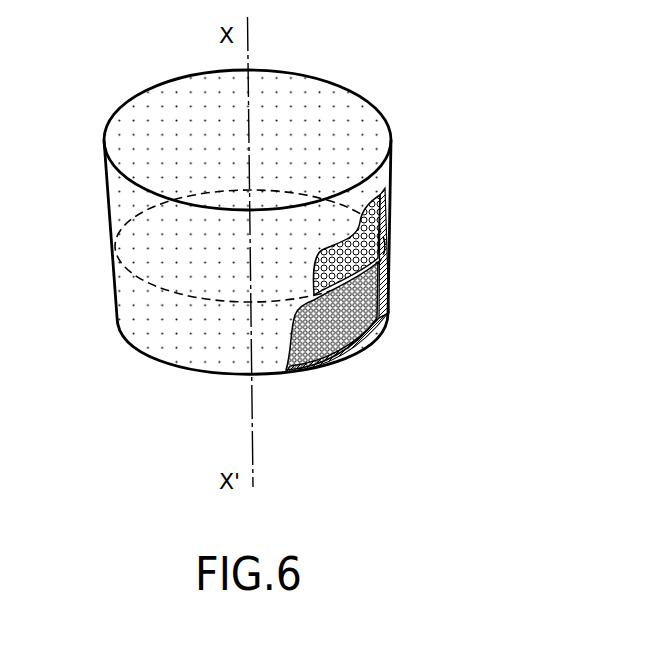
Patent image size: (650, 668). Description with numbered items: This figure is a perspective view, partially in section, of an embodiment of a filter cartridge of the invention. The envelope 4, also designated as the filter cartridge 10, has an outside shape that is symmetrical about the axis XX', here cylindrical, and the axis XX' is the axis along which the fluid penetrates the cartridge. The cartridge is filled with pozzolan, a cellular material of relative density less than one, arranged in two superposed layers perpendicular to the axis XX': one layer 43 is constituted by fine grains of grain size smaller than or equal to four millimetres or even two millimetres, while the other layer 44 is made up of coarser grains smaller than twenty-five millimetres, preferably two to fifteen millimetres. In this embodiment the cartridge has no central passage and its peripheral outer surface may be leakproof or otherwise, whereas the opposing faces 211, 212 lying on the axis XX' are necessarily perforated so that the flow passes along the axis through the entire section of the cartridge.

The envelope 4 is at (291, 249).
The filter cartridge 10 is at (291, 252).
The opposing face 211 is at (220, 117).
The opposing face 212 is at (228, 374).
The pozzolan layer 44 is at (382, 235).
The pozzolan layer 43 is at (383, 313).